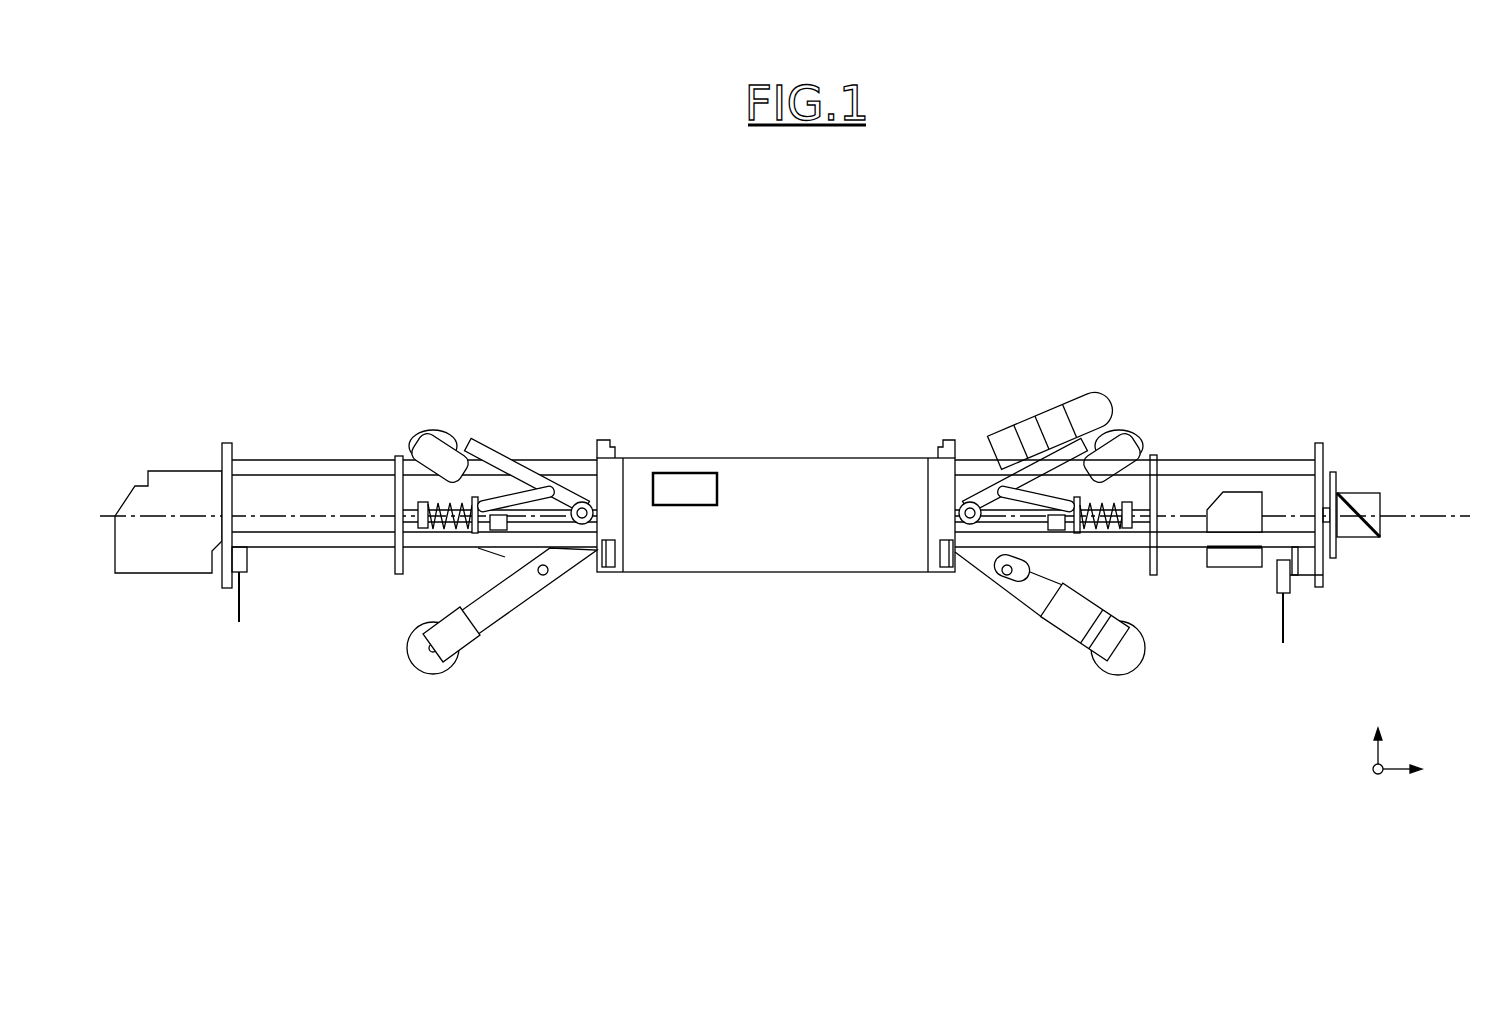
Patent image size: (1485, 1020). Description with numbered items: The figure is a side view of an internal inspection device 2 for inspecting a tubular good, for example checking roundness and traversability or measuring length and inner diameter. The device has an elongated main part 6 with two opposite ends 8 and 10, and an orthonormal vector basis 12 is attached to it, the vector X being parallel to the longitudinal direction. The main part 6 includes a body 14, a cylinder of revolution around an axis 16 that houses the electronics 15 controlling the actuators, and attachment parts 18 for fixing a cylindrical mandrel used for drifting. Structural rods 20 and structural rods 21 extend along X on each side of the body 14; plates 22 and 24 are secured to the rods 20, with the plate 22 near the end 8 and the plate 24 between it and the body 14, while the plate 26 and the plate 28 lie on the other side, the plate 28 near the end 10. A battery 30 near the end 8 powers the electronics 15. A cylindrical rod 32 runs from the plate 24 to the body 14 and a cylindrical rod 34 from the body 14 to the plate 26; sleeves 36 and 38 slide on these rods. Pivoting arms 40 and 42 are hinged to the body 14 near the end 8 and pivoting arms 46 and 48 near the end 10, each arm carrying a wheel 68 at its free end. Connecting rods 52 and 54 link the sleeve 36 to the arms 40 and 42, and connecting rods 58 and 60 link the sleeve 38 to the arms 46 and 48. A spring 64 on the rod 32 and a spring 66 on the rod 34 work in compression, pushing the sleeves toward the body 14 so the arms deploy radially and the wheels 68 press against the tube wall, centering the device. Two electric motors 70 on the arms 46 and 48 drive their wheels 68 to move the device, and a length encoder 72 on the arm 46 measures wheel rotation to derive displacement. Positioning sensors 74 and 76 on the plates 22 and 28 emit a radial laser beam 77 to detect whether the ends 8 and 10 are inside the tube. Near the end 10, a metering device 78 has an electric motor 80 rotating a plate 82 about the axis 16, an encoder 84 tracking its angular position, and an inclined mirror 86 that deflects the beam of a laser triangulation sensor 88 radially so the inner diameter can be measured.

The internal inspection device 2 is at (1040, 287).
The main part 6 is at (1208, 458).
The end 8 is at (229, 445).
The end 10 is at (1333, 465).
The orthonormal direct vector basis 12 is at (1420, 733).
The body 14 is at (746, 459).
The electronics 15 is at (685, 489).
The axis 16 is at (785, 488).
The attachment part 18 is at (612, 555).
The structural rods 20 is at (305, 500).
The structural rods 21 is at (1245, 460).
The structural plate 22 is at (240, 490).
The structural plate 24 is at (398, 470).
The structural plate 26 is at (1160, 460).
The structural plate 28 is at (1318, 445).
The battery 30 is at (140, 575).
The cylindrical rod 32 is at (570, 553).
The cylindrical rod 34 is at (1000, 535).
The sleeve 36 is at (538, 580).
The sleeve 38 is at (1035, 600).
The pivoting arm 40 is at (530, 468).
The pivoting arm 42 is at (540, 595).
The pivoting arm 46 is at (975, 490).
The pivoting arm 48 is at (1010, 582).
The connecting rod 52 is at (520, 498).
The connecting rod 54 is at (450, 618).
The connecting rod 58 is at (1085, 445).
The connecting rod 60 is at (1145, 635).
The spring 64 is at (440, 520).
The spring 66 is at (1110, 530).
The wheel 68 is at (435, 430).
The electric motor 70 is at (1058, 438).
The length encoder 72 is at (1040, 420).
The positioning sensor 74 is at (247, 562).
The positioning sensor 76 is at (1284, 596).
The laser beam 77 is at (240, 600).
The metering device 78 is at (1372, 486).
The electric motor 80 is at (1305, 562).
The plate 82 is at (1343, 460).
The encoder 84 is at (1295, 566).
The inclined mirror 86 is at (1378, 530).
The laser triangulation sensor 88 is at (1235, 535).